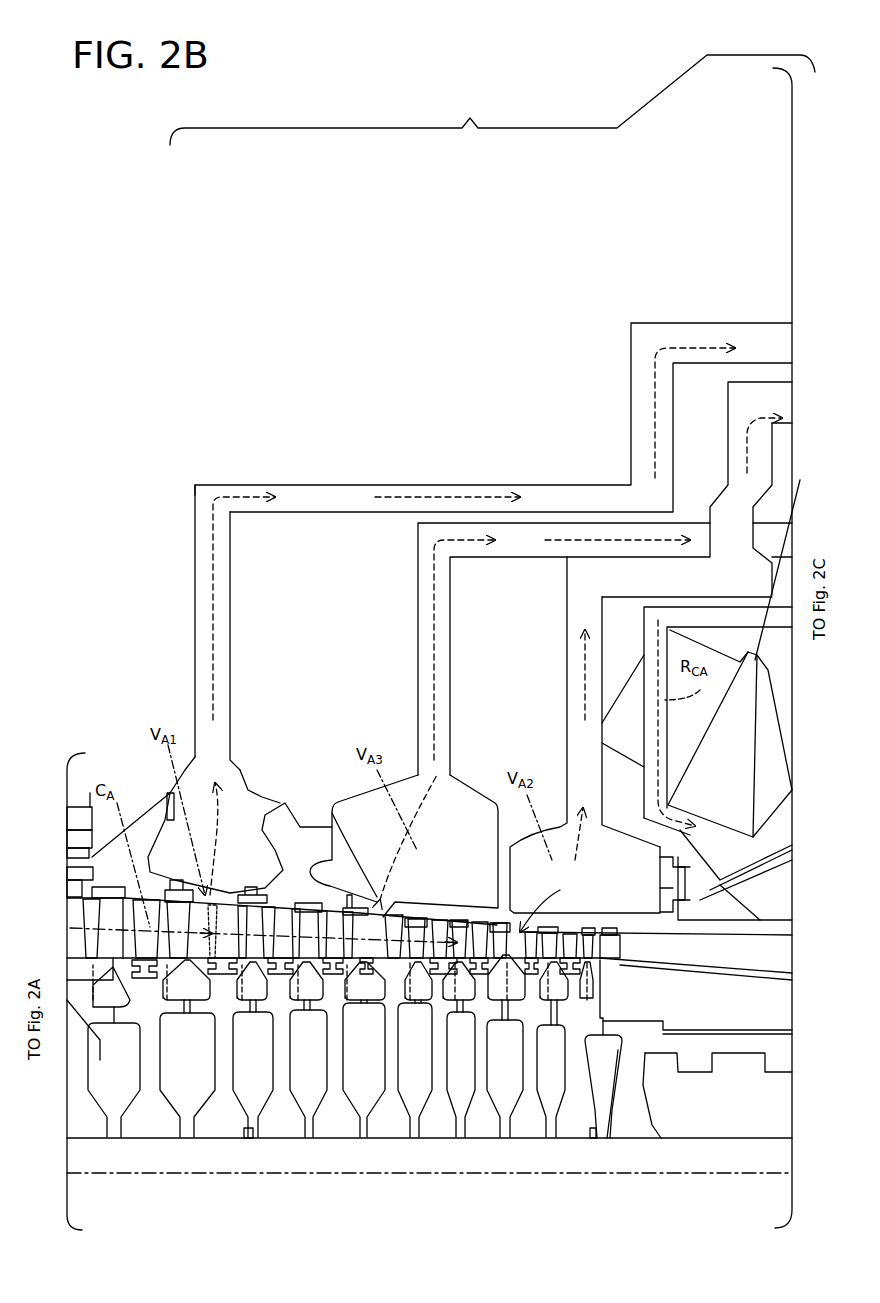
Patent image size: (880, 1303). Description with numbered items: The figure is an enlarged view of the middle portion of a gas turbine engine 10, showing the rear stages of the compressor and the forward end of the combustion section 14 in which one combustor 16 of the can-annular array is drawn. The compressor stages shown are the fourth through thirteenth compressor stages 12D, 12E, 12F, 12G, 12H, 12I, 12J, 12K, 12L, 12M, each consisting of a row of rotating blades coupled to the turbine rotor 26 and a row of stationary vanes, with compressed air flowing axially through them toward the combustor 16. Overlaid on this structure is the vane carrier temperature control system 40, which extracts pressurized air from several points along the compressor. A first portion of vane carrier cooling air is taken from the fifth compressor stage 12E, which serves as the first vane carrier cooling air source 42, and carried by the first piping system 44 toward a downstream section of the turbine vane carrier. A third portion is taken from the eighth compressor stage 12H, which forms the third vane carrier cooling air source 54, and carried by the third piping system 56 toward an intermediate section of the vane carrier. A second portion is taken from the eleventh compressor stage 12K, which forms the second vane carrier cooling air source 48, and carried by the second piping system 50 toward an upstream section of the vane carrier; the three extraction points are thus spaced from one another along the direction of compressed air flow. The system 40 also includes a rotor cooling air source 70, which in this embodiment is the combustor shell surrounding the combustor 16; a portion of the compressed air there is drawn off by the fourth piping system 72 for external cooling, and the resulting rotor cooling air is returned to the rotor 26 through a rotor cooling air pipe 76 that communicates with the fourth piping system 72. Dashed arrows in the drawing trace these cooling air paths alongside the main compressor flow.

The gas turbine engine 10 is at (283, 292).
The combustion section 14 is at (735, 1145).
The combustor 16 is at (780, 680).
The turbine rotor 26 is at (77, 1105).
The vane carrier temperature control system 40 is at (492, 100).
The first vane carrier cooling air source 42 is at (205, 903).
The first piping system 44 is at (195, 588).
The second vane carrier cooling air source 48 is at (560, 890).
The second piping system 50 is at (567, 712).
The third vane carrier cooling air source 54 is at (332, 813).
The third piping system 56 is at (418, 650).
The rotor cooling air source 70 is at (768, 650).
The fourth piping system 72 is at (644, 633).
The rotor cooling air pipe 76 is at (660, 843).
The fourth compressor stage 12D is at (88, 1062).
The fifth compressor stage 12E is at (174, 930).
The sixth compressor stage 12F is at (249, 930).
The seventh compressor stage 12G is at (304, 930).
The eighth compressor stage 12H is at (357, 930).
The ninth compressor stage 12I is at (407, 930).
The tenth compressor stage 12J is at (454, 930).
The eleventh compressor stage 12K is at (501, 930).
The twelfth compressor stage 12L is at (548, 930).
The thirteenth compressor stage 12M is at (589, 930).